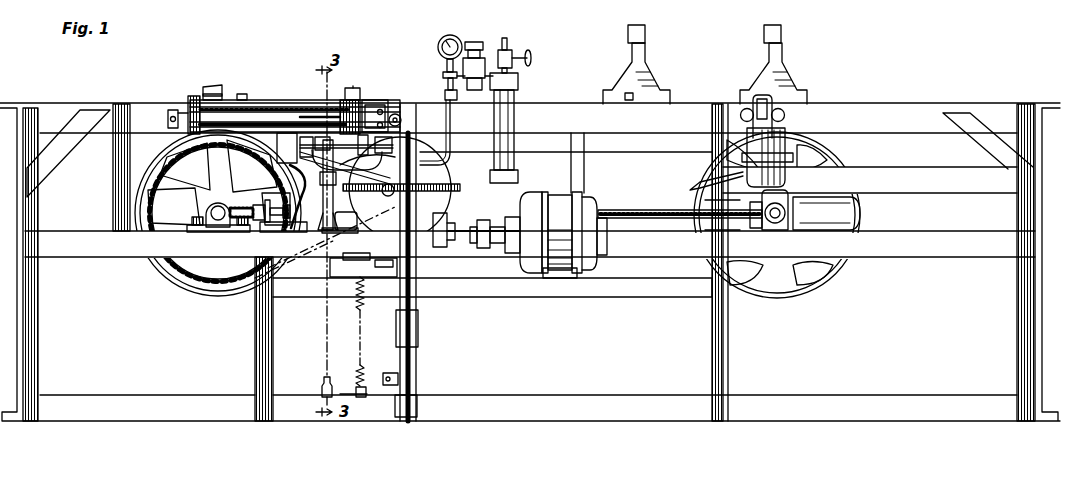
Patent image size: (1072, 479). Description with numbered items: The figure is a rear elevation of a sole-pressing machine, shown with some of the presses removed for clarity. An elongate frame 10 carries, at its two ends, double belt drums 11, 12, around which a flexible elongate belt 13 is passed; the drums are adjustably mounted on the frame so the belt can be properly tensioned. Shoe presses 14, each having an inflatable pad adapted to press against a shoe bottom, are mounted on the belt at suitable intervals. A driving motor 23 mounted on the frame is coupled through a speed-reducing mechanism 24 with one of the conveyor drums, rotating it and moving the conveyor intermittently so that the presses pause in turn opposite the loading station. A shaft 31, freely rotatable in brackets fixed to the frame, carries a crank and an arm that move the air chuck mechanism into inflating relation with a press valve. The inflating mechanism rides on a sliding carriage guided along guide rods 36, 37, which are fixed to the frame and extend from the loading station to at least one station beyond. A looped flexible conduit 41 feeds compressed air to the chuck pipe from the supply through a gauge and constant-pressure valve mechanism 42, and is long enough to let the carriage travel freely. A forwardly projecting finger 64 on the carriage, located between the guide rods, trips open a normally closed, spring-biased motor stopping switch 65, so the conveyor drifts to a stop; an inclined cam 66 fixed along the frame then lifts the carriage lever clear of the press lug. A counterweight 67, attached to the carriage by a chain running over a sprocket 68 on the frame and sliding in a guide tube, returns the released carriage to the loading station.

The elongate frame 10 is at (1025, 290).
The double belt drum 11 is at (207, 278).
The double belt drum 12 is at (817, 277).
The flexible elongate belt 13 is at (747, 300).
The shoe press 14 is at (640, 72).
The driving motor 23 is at (603, 253).
The speed-reducing mechanism 24 is at (427, 202).
The shaft 31 is at (437, 186).
The guide rod 36 is at (261, 104).
The guide rod 37 is at (281, 122).
The flexible conduit 41 is at (443, 162).
The gauge and constant-pressure valve mechanism 42 is at (488, 46).
The forwardly projecting finger 64 is at (352, 86).
The motor stopping switch 65 is at (170, 116).
The inclined cam 66 is at (222, 86).
The counterweight 67 is at (413, 335).
The sprocket 68 is at (397, 113).